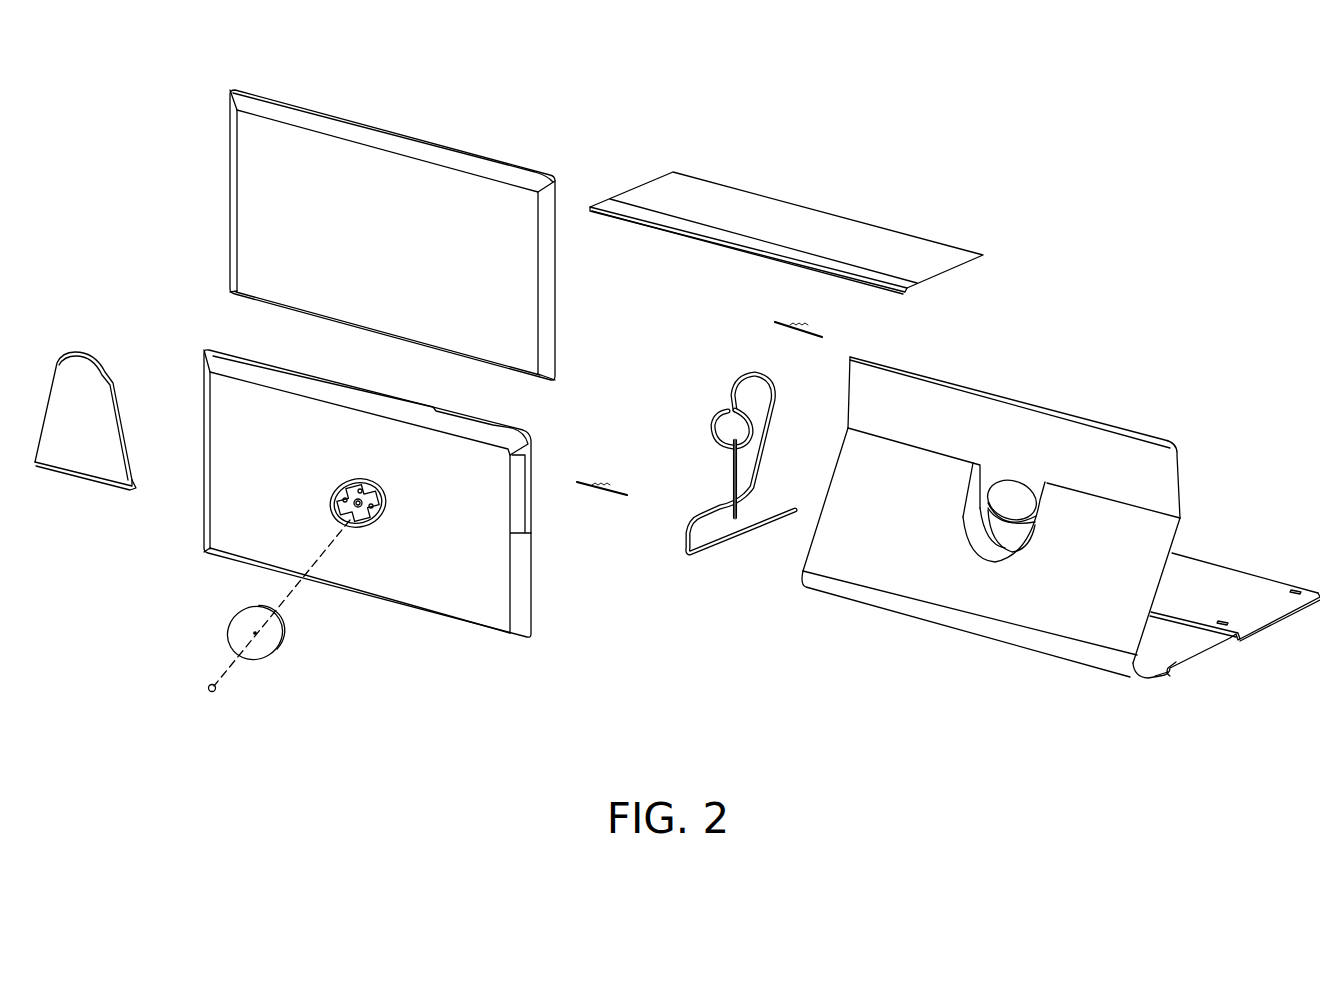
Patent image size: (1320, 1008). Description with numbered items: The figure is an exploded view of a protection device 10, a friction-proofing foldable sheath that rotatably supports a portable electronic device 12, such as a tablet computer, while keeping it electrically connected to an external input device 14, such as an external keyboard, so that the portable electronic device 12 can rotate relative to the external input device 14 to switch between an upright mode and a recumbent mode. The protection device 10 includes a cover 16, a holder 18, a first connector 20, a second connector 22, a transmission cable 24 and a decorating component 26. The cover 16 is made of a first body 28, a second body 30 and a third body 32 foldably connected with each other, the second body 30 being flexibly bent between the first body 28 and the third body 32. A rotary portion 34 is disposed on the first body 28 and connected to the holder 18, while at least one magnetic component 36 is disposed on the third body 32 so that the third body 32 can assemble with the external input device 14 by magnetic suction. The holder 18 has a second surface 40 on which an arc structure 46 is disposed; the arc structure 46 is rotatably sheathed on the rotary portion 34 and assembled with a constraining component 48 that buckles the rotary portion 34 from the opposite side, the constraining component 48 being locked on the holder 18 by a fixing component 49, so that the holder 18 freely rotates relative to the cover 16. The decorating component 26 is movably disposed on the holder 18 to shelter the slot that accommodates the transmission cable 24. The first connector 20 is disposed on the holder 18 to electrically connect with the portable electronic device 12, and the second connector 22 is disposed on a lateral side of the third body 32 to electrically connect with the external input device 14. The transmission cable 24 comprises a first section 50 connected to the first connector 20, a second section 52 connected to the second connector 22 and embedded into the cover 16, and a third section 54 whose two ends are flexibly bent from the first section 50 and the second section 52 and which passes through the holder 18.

The protection device 10 is at (1092, 158).
The portable electronic device 12 is at (249, 218).
The external input device 14 is at (783, 215).
The cover 16 is at (1061, 581).
The holder 18 is at (460, 600).
The first connector 20 is at (608, 496).
The second connector 22 is at (815, 331).
The transmission cable 24 is at (709, 438).
The decorating component 26 is at (82, 457).
The first body 28 is at (1072, 593).
The second body 30 is at (1160, 641).
The third body 32 is at (1260, 602).
The rotary portion 34 is at (1000, 537).
The magnetic component 36 is at (1224, 620).
The second surface 40 is at (480, 570).
The arc structure 46 is at (358, 535).
The constraining component 48 is at (258, 652).
The fixing component 49 is at (208, 691).
The first section 50 is at (694, 479).
The second section 52 is at (775, 434).
The third section 54 is at (713, 425).